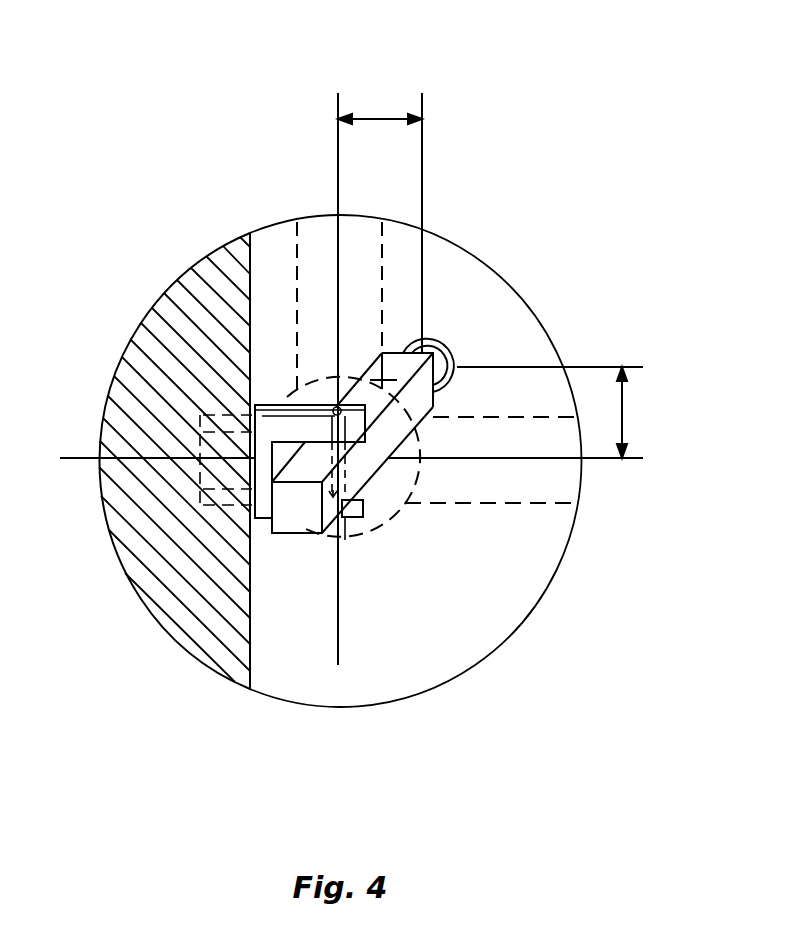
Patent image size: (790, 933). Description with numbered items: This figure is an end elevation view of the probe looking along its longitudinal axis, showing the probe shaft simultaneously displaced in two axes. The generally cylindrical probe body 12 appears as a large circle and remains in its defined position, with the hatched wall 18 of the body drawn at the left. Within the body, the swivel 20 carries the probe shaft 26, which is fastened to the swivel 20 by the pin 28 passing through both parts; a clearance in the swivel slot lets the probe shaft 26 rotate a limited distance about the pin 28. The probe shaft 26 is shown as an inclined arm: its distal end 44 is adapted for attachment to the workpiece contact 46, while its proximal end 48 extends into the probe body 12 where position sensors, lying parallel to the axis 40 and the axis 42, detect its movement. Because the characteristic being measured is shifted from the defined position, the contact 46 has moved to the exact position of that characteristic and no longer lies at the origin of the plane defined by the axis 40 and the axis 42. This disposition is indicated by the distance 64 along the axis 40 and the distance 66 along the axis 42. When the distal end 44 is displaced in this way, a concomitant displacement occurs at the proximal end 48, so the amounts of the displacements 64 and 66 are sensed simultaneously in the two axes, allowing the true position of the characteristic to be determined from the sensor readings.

The probe body 12 is at (503, 638).
The wall 18 is at (247, 643).
The swivel 20 is at (352, 518).
The probe shaft 26 is at (370, 476).
The pin 28 is at (333, 538).
The axis 40 is at (338, 178).
The axis 42 is at (605, 458).
The distal end 44 is at (437, 396).
The workpiece contact 46 is at (443, 347).
The proximal end 48 is at (270, 528).
The displacement distance 64 is at (380, 117).
The displacement distance 66 is at (622, 417).